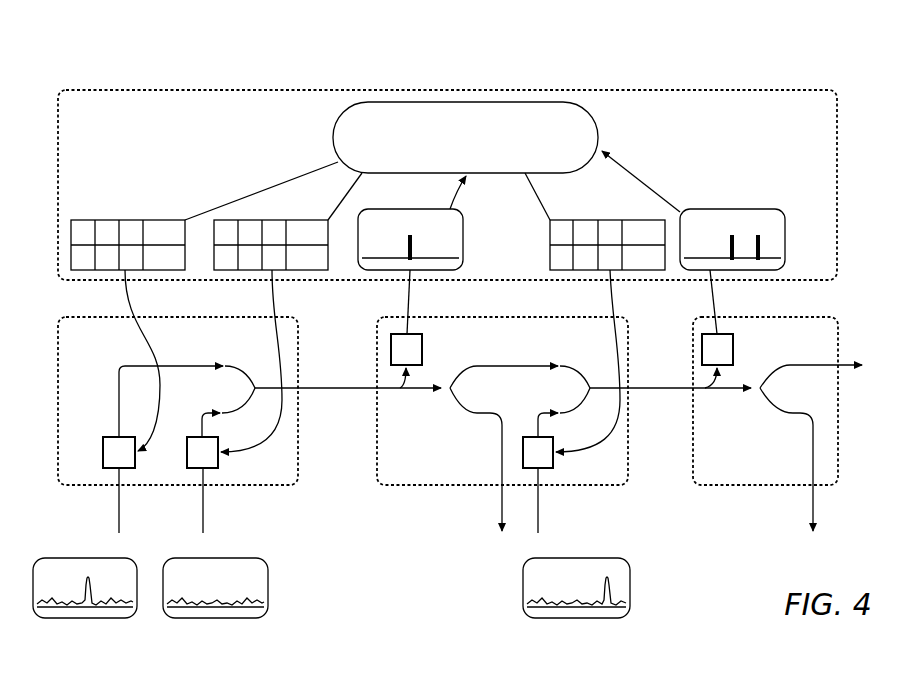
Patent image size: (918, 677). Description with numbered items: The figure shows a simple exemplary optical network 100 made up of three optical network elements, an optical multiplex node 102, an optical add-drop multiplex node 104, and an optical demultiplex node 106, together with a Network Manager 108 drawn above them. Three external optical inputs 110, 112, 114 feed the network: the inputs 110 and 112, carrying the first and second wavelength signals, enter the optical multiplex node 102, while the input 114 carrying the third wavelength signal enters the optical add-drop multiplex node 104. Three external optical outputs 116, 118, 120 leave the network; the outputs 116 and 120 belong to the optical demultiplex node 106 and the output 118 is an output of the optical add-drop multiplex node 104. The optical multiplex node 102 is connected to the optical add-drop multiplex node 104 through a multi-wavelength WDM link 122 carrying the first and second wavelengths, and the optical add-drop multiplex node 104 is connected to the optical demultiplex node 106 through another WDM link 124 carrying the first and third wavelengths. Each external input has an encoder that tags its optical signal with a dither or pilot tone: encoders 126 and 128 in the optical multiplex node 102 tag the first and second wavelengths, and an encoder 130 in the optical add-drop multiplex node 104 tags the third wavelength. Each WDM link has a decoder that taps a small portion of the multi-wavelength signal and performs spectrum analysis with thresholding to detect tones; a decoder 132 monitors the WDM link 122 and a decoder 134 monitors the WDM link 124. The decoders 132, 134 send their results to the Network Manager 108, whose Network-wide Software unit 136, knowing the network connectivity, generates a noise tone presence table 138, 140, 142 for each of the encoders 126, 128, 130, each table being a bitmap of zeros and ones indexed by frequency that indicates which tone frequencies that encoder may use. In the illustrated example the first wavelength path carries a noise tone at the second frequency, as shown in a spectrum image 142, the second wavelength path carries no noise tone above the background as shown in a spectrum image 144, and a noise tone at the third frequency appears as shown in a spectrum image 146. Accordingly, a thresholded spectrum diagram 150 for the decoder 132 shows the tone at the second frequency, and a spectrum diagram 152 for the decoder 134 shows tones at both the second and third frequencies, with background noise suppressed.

The optical network 100 is at (106, 52).
The optical multiplex node 102 is at (178, 317).
The optical add-drop multiplex node (OADM) 104 is at (505, 317).
The optical demultiplex node 106 is at (765, 317).
The Network Manager 108 is at (320, 90).
The external optical input 110 is at (118, 497).
The external optical input 112 is at (203, 497).
The external optical input 114 is at (538, 497).
The external optical output 116 is at (843, 368).
The external optical output 118 is at (502, 497).
The external optical output 120 is at (813, 497).
The WDM link 122 is at (313, 390).
The WDM link 124 is at (648, 390).
The encoder 126 is at (102, 452).
The encoder 128 is at (186, 452).
The encoder 130 is at (522, 452).
The decoder 132 is at (423, 350).
The decoder 134 is at (734, 350).
The Network-wide Software unit 136 is at (600, 140).
The noise tone presence table 138 is at (123, 220).
The noise tone presence table 140 is at (276, 220).
The noise tone presence table 142 is at (610, 220).
The spectrum image 144 is at (268, 590).
The spectrum image 146 is at (523, 588).
The thresholded spectrum diagram 150 is at (464, 241).
The spectrum diagram 152 is at (786, 240).